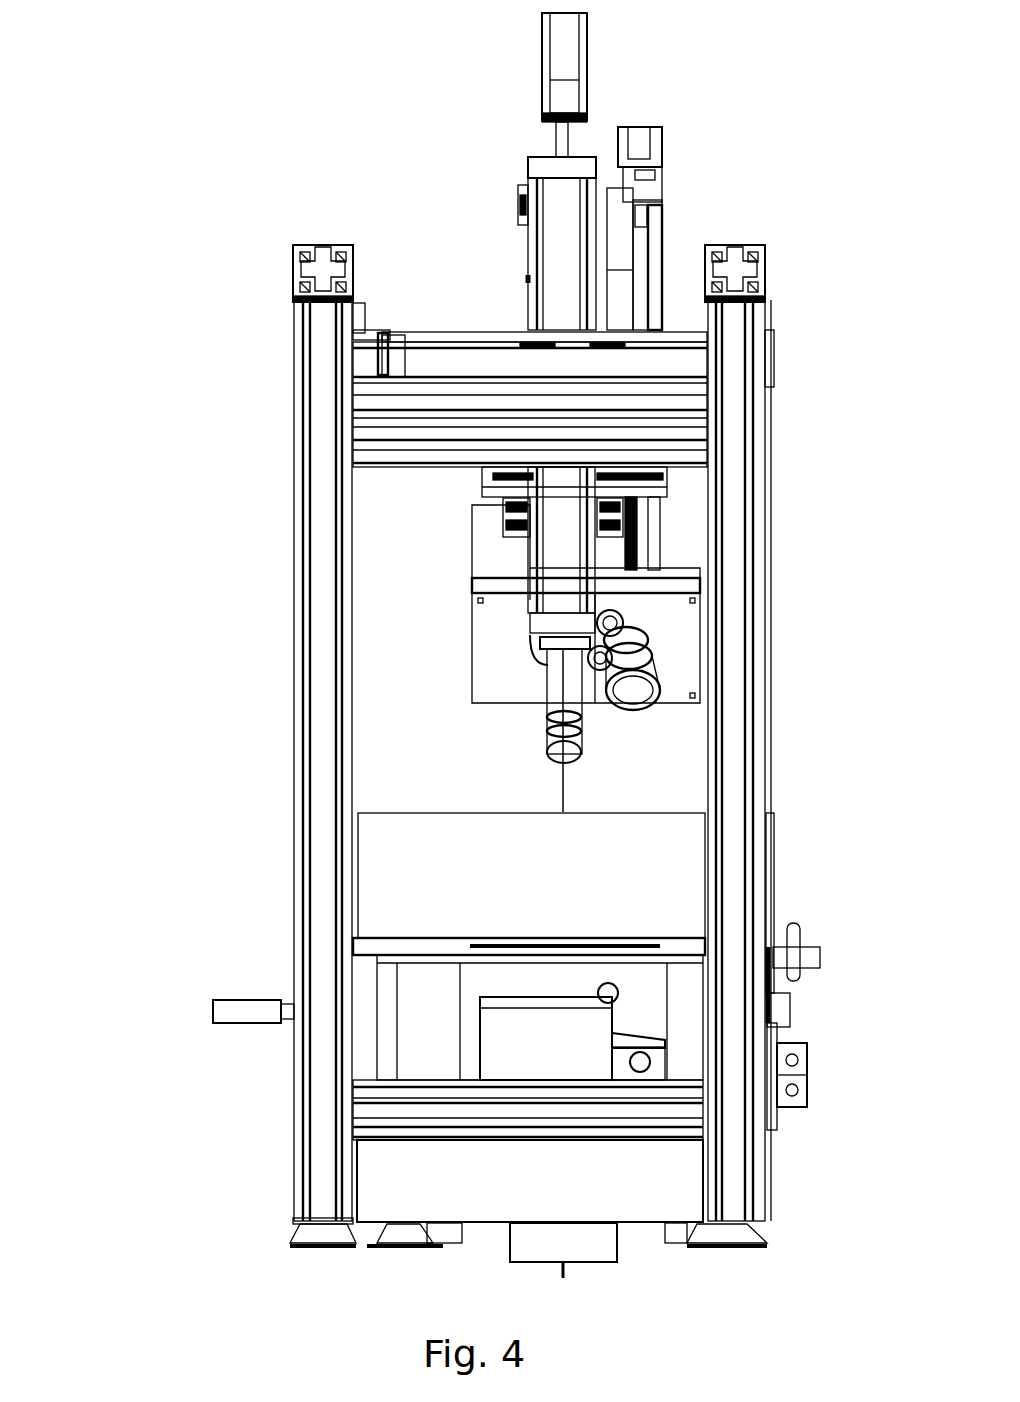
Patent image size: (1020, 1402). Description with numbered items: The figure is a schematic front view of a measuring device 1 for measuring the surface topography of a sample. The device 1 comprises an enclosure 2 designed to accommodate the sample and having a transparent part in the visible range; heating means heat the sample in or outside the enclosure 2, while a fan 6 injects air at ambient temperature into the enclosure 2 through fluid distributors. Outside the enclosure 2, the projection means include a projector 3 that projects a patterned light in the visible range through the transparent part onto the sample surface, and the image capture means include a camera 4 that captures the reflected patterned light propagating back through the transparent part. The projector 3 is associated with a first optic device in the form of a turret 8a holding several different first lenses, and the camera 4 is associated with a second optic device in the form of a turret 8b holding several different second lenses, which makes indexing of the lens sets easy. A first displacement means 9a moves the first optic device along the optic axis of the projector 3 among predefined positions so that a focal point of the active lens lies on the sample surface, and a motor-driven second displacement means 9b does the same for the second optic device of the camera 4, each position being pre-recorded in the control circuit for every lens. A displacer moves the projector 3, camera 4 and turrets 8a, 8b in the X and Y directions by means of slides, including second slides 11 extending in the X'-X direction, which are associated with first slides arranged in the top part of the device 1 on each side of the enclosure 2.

The measuring device 1 is at (313, 138).
The enclosure 2 is at (377, 852).
The projector 3 is at (502, 542).
The camera 4 is at (492, 470).
The fan 6 is at (507, 1042).
The turret 8a is at (530, 690).
The turret 8b is at (627, 512).
The first displacement means 9a is at (647, 255).
The second displacement means 9b is at (557, 267).
The second slides 11 is at (423, 357).